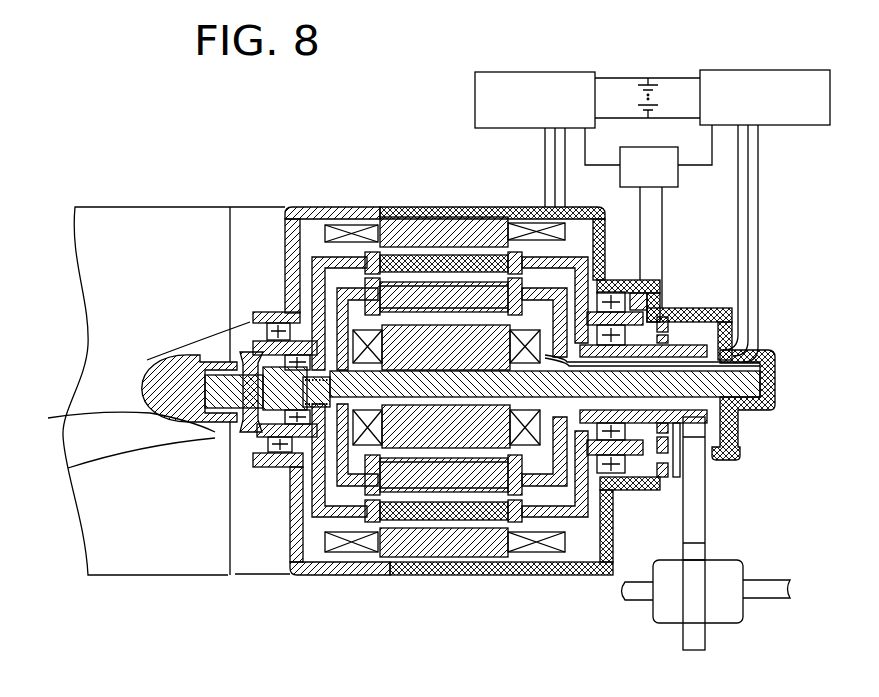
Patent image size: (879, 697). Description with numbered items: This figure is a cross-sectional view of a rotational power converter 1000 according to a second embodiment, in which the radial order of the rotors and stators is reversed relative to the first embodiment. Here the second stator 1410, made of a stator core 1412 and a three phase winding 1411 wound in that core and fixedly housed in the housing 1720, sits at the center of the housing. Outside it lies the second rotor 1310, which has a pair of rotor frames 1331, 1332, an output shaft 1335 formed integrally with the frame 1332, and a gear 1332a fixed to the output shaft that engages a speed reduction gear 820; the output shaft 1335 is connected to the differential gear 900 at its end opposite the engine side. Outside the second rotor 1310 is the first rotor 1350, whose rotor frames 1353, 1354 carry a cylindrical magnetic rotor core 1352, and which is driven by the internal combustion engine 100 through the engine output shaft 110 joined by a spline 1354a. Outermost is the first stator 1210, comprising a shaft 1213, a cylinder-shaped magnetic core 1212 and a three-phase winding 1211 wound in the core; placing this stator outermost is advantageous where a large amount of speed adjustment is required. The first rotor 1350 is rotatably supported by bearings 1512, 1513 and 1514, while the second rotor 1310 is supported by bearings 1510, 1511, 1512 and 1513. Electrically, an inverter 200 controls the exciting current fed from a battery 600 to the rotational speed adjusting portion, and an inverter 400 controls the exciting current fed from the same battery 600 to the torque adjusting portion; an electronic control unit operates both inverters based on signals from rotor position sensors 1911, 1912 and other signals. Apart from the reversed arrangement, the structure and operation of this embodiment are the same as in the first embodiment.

The internal combustion engine 100 is at (106, 575).
The output shaft of engine 110 is at (111, 422).
The inverter 200 is at (764, 68).
The inverter 400 is at (530, 72).
The battery 600 is at (641, 78).
The speed reduction gear 820 is at (700, 489).
The differential gear 900 is at (755, 627).
The rotational power converter 1000 is at (283, 203).
The first stator 1210 is at (398, 577).
The three-phase winding 1211 is at (378, 548).
The magnetic core 1212 is at (430, 557).
The shaft 1213 is at (262, 472).
The second rotor 1310 is at (482, 278).
The rotor frame 1331 is at (572, 547).
The rotor frame 1332 is at (335, 505).
The gear 1332a is at (698, 430).
The output shaft 1335 is at (715, 308).
The first rotor 1350 is at (458, 520).
The magnetic rotor core 1352 is at (498, 548).
The rotor frame 1353 is at (543, 540).
The rotor frame 1354 is at (342, 540).
The spline 1354a is at (130, 409).
The second stator 1410 is at (407, 328).
The three phase winding 1411 is at (358, 332).
The stator core 1412 is at (433, 247).
The bearing 1510 is at (665, 468).
The bearing 1511 is at (290, 356).
The bearing 1512 is at (620, 468).
The bearing 1513 is at (268, 330).
The bearing 1514 is at (292, 452).
The housing 1720 is at (308, 207).
The rotor position sensor 1911 is at (660, 325).
The rotor position sensor 1912 is at (668, 338).